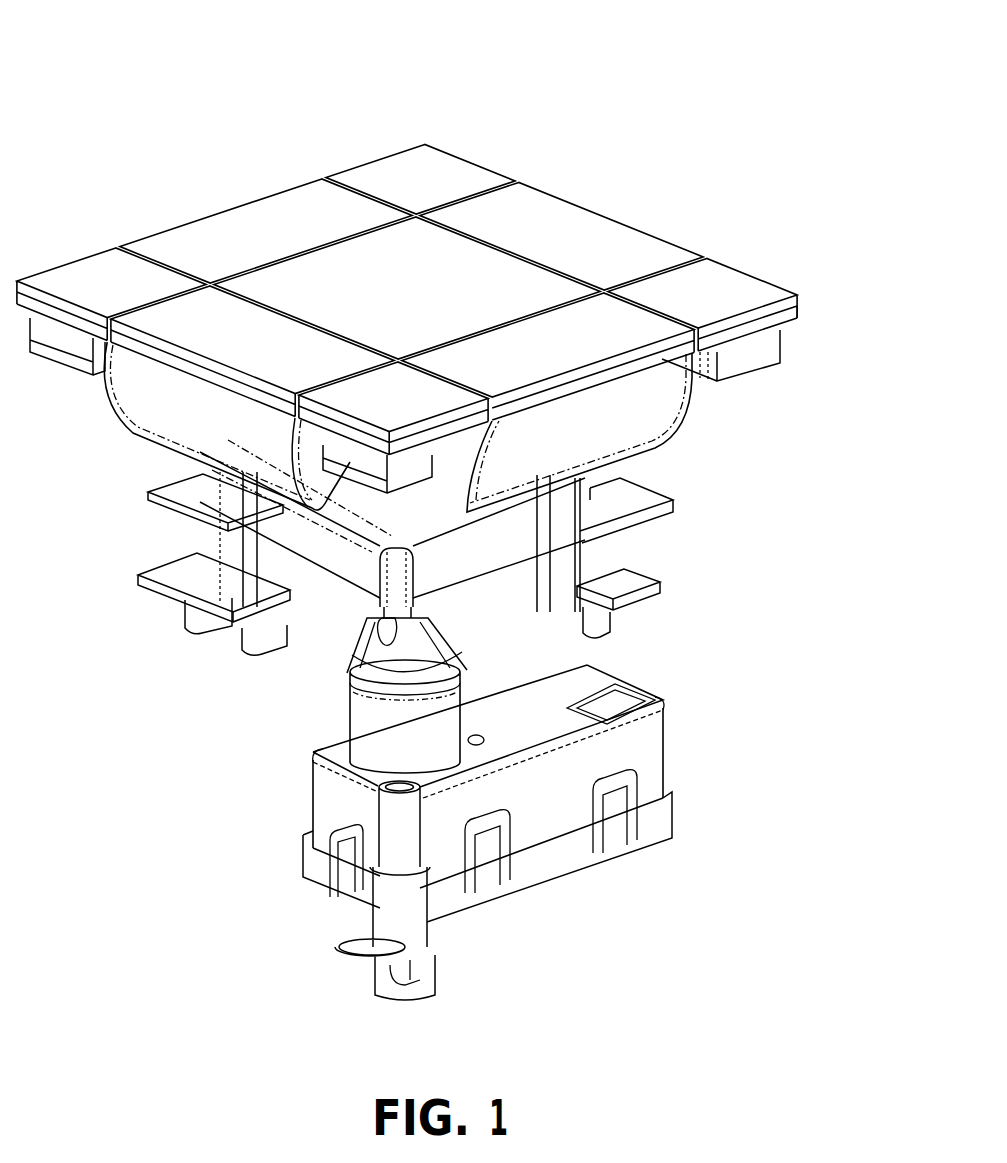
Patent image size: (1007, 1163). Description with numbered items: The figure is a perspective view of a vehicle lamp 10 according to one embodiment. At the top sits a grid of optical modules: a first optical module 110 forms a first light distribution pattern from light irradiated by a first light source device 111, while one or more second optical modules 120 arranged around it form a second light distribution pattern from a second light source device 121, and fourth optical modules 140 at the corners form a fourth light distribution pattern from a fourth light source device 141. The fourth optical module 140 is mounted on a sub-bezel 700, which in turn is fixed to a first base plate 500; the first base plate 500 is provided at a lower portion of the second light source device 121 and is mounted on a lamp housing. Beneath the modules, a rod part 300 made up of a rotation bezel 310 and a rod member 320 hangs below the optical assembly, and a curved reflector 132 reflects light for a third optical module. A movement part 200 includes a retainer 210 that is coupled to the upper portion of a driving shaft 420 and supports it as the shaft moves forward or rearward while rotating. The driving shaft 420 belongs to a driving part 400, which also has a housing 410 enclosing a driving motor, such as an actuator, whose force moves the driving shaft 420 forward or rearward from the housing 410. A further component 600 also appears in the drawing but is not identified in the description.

The vehicle lamp 10 is at (141, 93).
The first optical module 110 is at (496, 74).
The first light source device 111 is at (473, 277).
The second optical module 120 is at (631, 93).
The second light source device 121 is at (606, 230).
The fourth optical module 140 is at (768, 147).
The fourth light source device 141 is at (740, 288).
The sub-bezel 700 is at (800, 318).
The first base plate 500 is at (777, 360).
The rod part 300 is at (790, 497).
The rotation bezel 310 is at (652, 400).
The rod member 320 is at (562, 567).
The reflector 132 is at (367, 507).
The lower plate 600 is at (318, 555).
The movement part 200 is at (152, 693).
The retainer 210 is at (357, 640).
The driving part 400 is at (143, 770).
The driving shaft 420 is at (347, 668).
The housing 410 is at (348, 807).